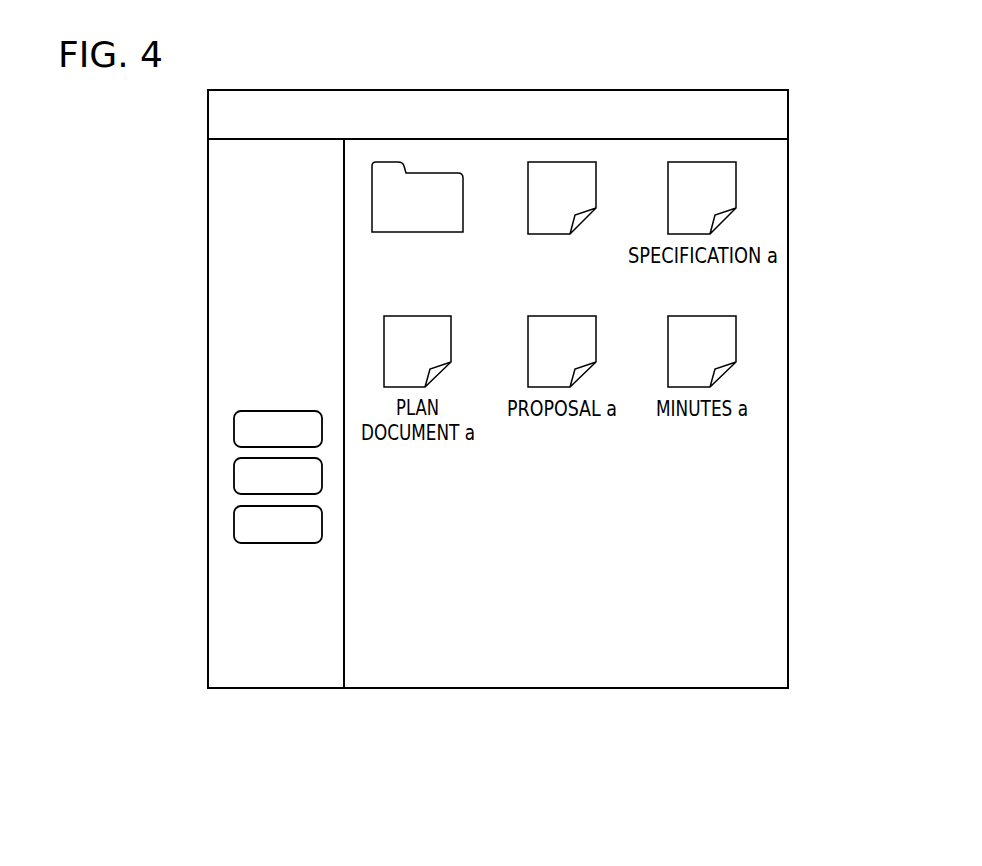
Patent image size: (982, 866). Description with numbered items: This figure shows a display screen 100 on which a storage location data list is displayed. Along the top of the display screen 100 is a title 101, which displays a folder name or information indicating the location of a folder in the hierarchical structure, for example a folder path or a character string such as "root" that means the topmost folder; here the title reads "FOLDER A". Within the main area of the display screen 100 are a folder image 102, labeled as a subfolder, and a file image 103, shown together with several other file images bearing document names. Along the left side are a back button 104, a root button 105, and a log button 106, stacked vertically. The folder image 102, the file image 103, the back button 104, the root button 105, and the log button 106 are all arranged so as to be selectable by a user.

The display screen 100 is at (623, 689).
The title 101 is at (470, 118).
The folder image 102 is at (424, 267).
The file image 103 is at (563, 267).
The back button 104 is at (234, 425).
The root button 105 is at (234, 473).
The log button 106 is at (234, 522).